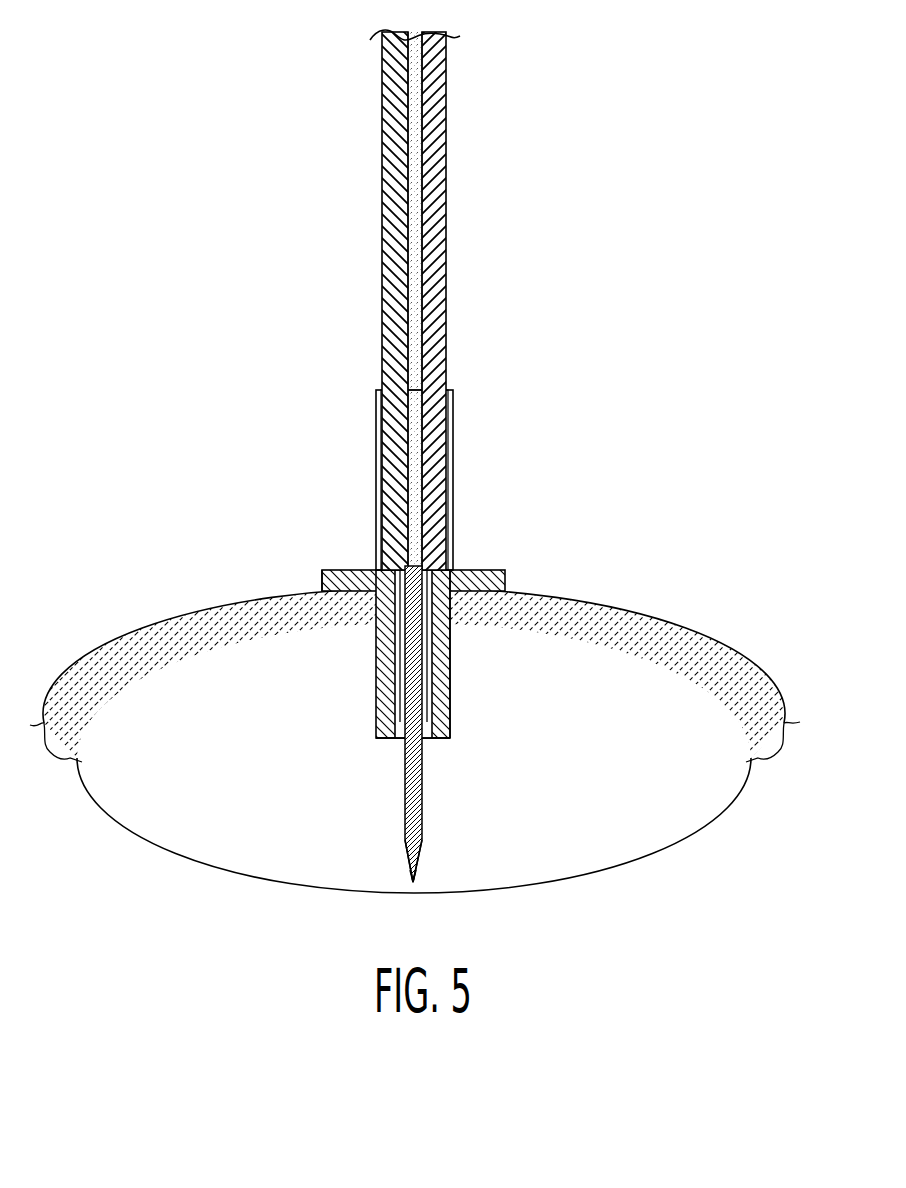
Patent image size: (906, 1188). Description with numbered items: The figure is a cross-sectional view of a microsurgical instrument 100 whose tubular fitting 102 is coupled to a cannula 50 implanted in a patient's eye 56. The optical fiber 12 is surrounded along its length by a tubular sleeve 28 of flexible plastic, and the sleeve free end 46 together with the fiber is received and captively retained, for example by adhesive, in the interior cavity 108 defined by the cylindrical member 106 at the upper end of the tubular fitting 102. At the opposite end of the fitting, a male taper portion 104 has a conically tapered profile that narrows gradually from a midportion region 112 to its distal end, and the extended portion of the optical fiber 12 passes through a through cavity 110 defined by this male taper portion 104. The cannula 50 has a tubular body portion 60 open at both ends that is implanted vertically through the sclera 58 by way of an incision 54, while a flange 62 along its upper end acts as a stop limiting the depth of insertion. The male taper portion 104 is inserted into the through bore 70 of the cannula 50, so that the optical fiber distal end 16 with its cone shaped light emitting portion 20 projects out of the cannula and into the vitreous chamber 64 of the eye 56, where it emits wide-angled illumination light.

The optical fiber 12 is at (383, 53).
The optical fiber distal end 16 is at (388, 808).
The light emitting portion 20 is at (420, 845).
The sleeve 28 is at (381, 135).
The sleeve free end 46 is at (447, 308).
The cannula 50 is at (498, 570).
The incision 54 is at (376, 638).
The eye 56 is at (745, 681).
The sclera 58 is at (614, 607).
The tubular body portion 60 is at (450, 703).
The flange 62 is at (322, 568).
The vitreous chamber 64 is at (175, 693).
The through bore 70 is at (402, 740).
The microsurgical instrument 100 is at (510, 222).
The tubular fitting 102 is at (454, 557).
The male taper portion 104 is at (431, 658).
The cylindrical member 106 is at (377, 433).
The interior cavity 108 is at (455, 447).
The through cavity 110 is at (396, 668).
The midportion region 112 is at (374, 568).